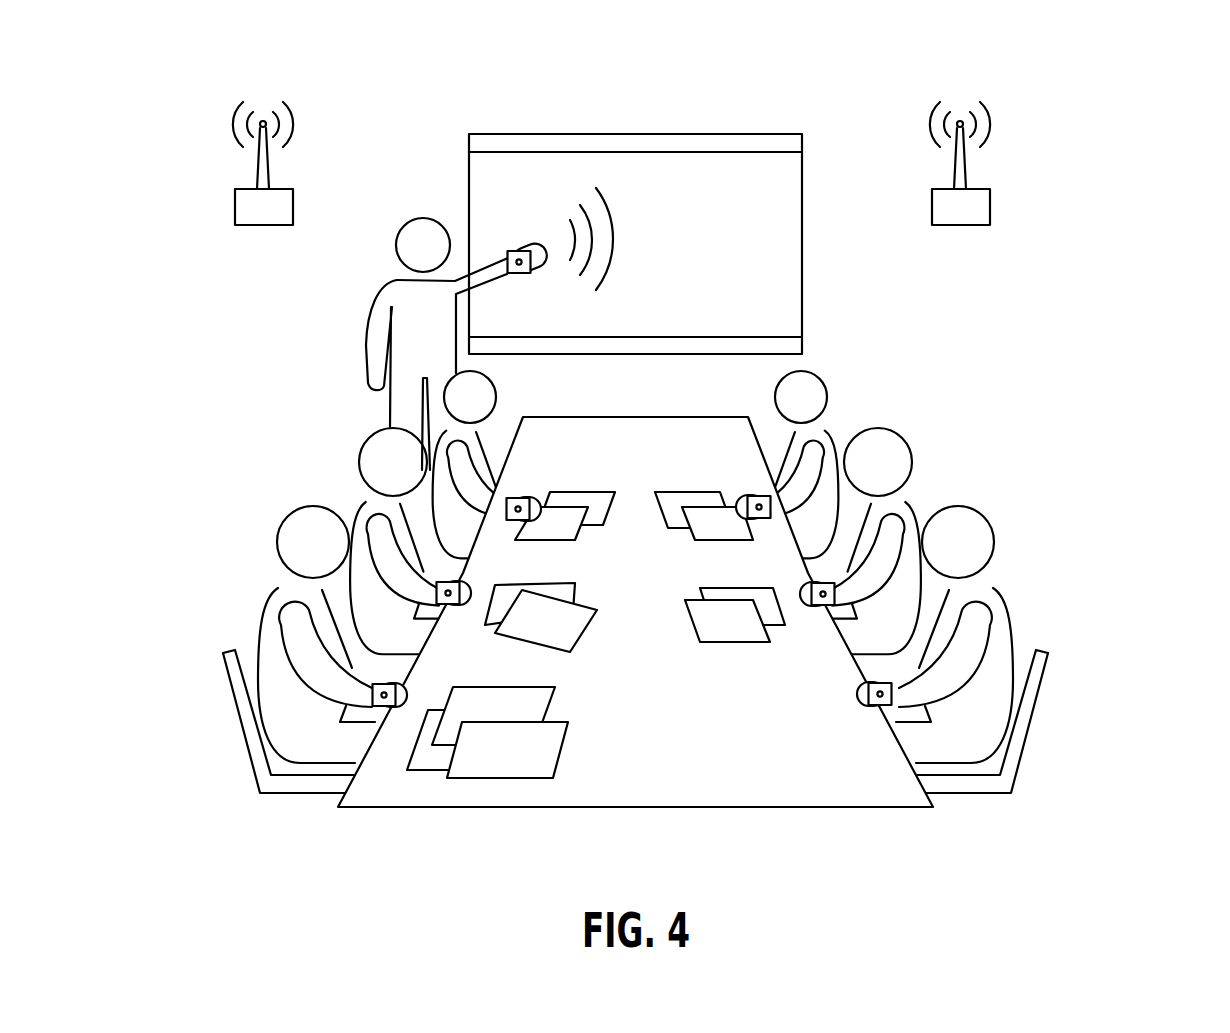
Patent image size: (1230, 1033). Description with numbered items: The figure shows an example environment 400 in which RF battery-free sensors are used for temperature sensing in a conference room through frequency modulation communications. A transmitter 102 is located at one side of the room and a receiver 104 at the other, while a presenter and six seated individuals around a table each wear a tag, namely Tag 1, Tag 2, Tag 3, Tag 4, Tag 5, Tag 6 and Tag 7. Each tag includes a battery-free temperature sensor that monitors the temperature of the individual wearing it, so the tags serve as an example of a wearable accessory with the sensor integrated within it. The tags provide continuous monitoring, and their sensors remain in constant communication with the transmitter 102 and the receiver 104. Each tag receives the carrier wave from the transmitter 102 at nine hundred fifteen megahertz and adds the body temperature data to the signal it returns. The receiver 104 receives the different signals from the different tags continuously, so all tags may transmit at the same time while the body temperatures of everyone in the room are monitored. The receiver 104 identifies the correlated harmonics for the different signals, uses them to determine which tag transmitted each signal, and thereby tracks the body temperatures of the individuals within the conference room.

The transmitter 102 is at (230, 275).
The receiver 104 is at (990, 268).
The example environment 400 is at (1133, 70).
The tag Tag 1 is at (512, 247).
The tag Tag 2 is at (510, 500).
The tag Tag 3 is at (440, 590).
The tag Tag 4 is at (377, 706).
The tag Tag 5 is at (766, 502).
The tag Tag 6 is at (832, 592).
The tag Tag 7 is at (892, 706).